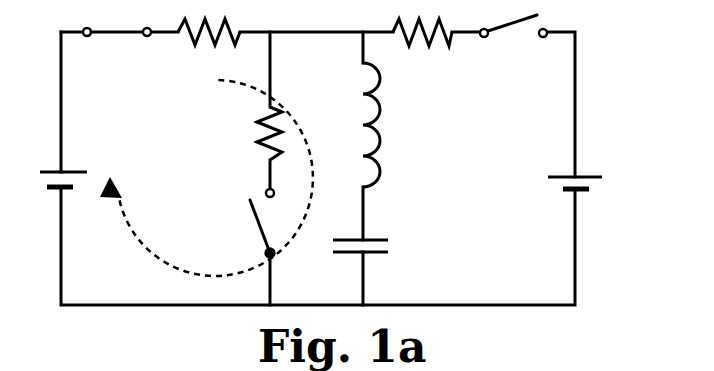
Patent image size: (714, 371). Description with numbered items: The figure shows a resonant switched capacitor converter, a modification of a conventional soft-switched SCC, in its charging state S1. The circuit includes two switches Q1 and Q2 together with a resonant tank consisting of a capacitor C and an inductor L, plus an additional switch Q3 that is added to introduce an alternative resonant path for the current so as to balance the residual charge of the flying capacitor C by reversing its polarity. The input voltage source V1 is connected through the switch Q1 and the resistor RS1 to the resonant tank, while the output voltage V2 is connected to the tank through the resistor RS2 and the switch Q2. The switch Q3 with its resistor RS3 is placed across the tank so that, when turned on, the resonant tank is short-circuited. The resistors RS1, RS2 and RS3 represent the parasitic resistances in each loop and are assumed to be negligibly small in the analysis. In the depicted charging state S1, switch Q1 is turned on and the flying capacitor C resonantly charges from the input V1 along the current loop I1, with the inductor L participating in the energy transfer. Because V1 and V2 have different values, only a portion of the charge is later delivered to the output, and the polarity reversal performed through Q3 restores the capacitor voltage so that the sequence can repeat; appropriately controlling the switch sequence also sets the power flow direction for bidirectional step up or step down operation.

The switch Q1 is at (117, 49).
The resistor RS1 is at (208, 47).
The resistor RS2 is at (422, 49).
The switch Q2 is at (513, 44).
The input voltage V1 is at (79, 157).
The charging state S1 is at (194, 164).
The resistor RS3 is at (244, 133).
The additional switch Q3 is at (237, 223).
The inductor L is at (352, 125).
The capacitor C is at (359, 222).
The output voltage V2 is at (563, 158).
The current loop I1 is at (206, 178).